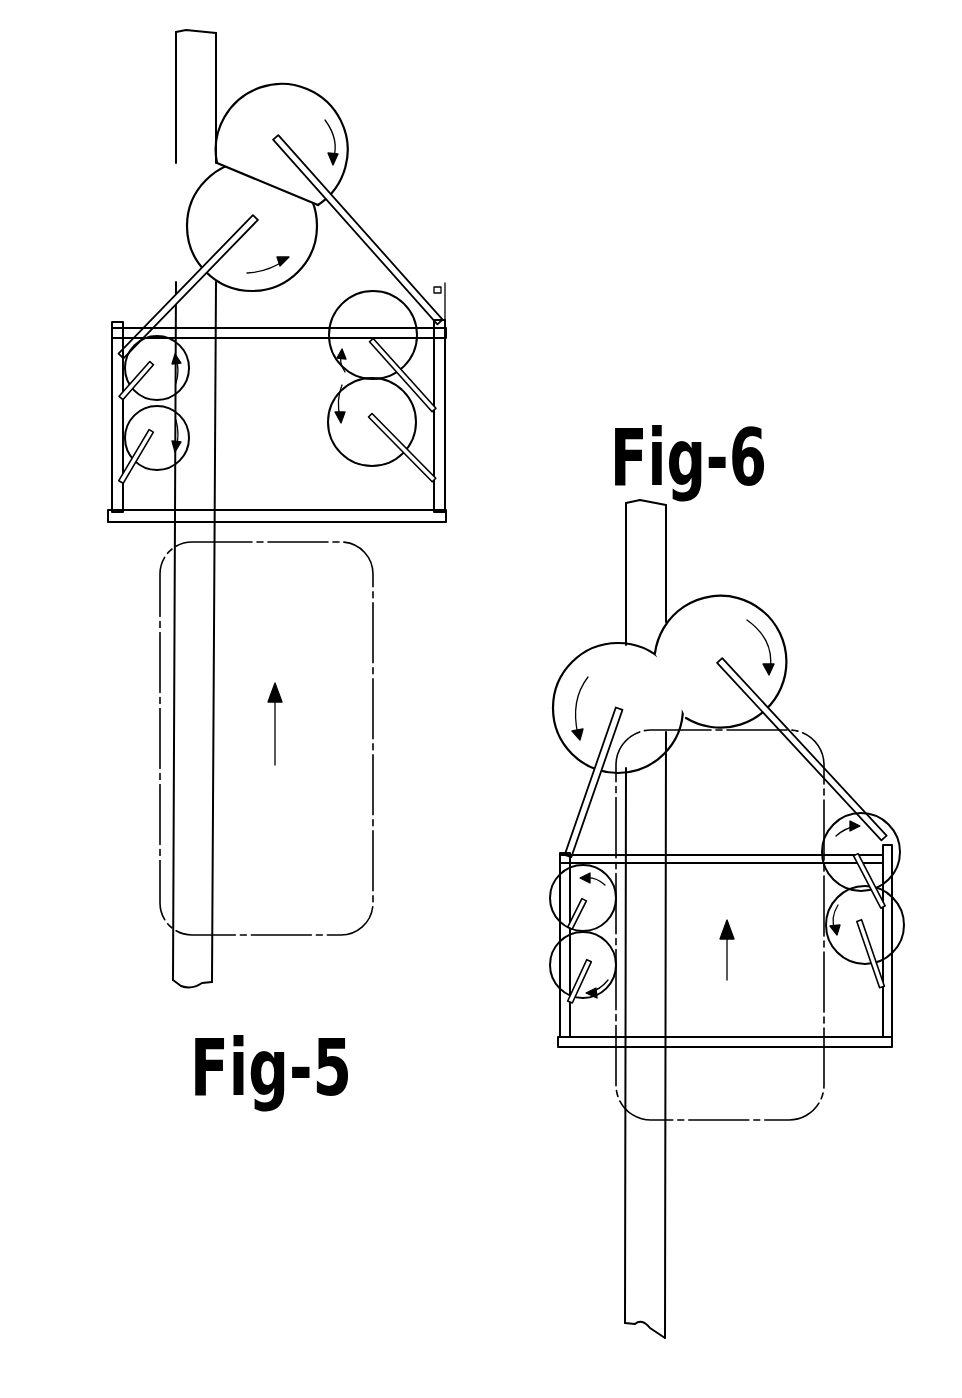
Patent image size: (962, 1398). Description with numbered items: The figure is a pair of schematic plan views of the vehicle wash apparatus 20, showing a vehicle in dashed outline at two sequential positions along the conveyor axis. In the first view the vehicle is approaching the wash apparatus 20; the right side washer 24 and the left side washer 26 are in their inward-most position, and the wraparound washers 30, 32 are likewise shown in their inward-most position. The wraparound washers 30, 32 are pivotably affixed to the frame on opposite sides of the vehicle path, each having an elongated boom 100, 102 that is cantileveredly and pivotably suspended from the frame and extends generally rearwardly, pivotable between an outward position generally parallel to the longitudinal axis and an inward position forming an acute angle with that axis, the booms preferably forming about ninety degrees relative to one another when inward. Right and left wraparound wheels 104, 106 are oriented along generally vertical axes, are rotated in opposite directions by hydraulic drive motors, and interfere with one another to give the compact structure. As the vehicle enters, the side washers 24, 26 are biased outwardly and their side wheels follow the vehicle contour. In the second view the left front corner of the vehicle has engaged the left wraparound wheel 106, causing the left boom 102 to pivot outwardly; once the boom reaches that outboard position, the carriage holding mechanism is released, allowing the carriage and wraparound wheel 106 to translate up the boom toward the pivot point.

In FIG. 5, the vehicle wash apparatus 20 is at (472, 351).
In FIG. 5, the right side washer 24 is at (428, 432).
In FIG. 5, the left side washer 26 is at (103, 453).
In FIG. 5, the wraparound washer 30 is at (358, 131).
In FIG. 5, the wraparound washer 32 is at (195, 178).
In FIG. 5, the boom 100 is at (372, 230).
In FIG. 6, the boom 100 is at (797, 712).
In FIG. 5, the left boom 102 is at (172, 300).
In FIG. 6, the left boom 102 is at (588, 805).
In FIG. 5, the right wraparound wheel 104 is at (290, 97).
In FIG. 6, the right wraparound wheel 104 is at (725, 595).
In FIG. 5, the left wraparound wheel 106 is at (212, 215).
In FIG. 6, the left wraparound wheel 106 is at (592, 655).